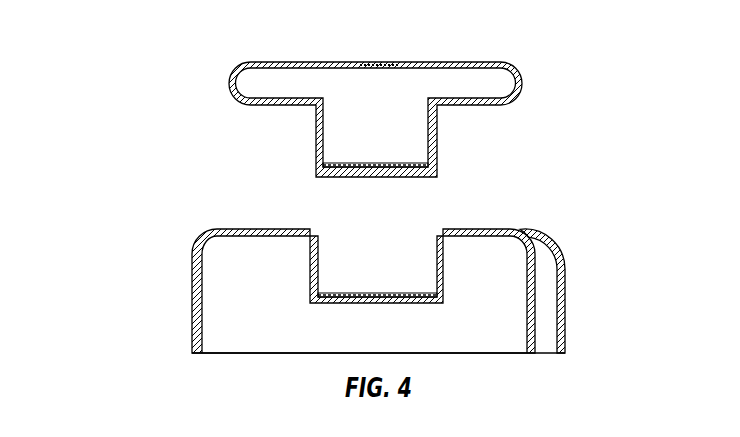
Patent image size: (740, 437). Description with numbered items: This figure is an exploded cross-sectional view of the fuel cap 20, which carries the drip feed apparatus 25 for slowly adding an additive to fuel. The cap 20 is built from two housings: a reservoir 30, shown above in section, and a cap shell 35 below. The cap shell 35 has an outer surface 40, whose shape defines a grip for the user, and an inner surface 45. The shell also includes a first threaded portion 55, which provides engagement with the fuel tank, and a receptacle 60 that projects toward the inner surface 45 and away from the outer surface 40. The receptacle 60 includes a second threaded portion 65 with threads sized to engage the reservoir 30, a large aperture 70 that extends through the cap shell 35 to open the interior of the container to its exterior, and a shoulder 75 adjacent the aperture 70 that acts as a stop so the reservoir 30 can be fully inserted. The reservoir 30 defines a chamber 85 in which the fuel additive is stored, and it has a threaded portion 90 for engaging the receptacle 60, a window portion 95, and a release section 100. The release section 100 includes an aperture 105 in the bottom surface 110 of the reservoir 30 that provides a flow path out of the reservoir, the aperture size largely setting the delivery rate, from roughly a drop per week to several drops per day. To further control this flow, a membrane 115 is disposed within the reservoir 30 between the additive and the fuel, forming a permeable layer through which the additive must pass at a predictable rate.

The cap 20 is at (146, 58).
The drip feed apparatus 25 is at (542, 233).
The reservoir 30 is at (459, 62).
The cap shell 35 is at (556, 241).
The outer surface 40 is at (565, 258).
The inner surface 45 is at (522, 350).
The first threaded portion 55 is at (203, 337).
The receptacle 60 is at (443, 290).
The second threaded portion 65 is at (322, 247).
The aperture 70 is at (330, 303).
The shoulder 75 is at (421, 295).
The chamber 85 is at (311, 82).
The threaded portion 90 is at (437, 138).
The window portion 95 is at (375, 63).
The release section 100 is at (348, 154).
The aperture 105 is at (373, 178).
The bottom surface 110 is at (428, 178).
The membrane 115 is at (331, 160).